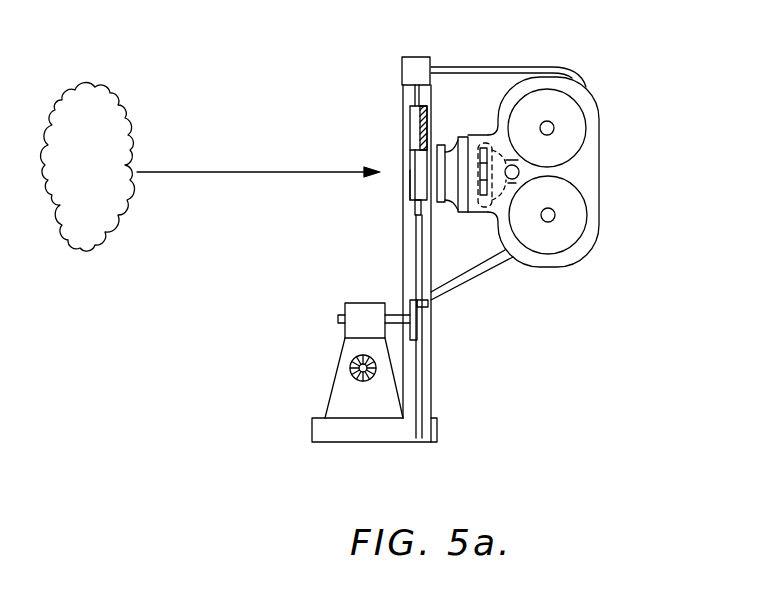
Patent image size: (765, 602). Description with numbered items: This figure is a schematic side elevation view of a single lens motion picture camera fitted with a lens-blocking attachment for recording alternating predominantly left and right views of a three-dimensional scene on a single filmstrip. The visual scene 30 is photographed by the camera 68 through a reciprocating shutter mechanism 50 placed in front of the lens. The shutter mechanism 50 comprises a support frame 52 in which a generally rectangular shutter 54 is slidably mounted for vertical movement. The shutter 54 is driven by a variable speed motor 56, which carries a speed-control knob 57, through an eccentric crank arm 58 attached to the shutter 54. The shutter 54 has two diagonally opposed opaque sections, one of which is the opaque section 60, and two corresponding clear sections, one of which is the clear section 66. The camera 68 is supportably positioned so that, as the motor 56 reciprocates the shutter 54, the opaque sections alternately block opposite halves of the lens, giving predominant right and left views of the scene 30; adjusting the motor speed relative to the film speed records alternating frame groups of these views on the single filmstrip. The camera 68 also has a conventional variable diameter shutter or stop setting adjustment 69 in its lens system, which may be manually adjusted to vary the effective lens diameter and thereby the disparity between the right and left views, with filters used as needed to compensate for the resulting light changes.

The visual scene 30 is at (113, 99).
The reciprocating shutter mechanism 50 is at (428, 51).
The support frame 52 is at (433, 395).
The shutter 54 is at (410, 130).
The variable speed motor 56 is at (342, 377).
The speed-control knob 57 is at (387, 381).
The eccentric crank arm 58 is at (428, 252).
The opaque section 60 is at (427, 116).
The clear section 66 is at (415, 187).
The camera 68 is at (593, 172).
The stop setting adjustment 69 is at (443, 203).